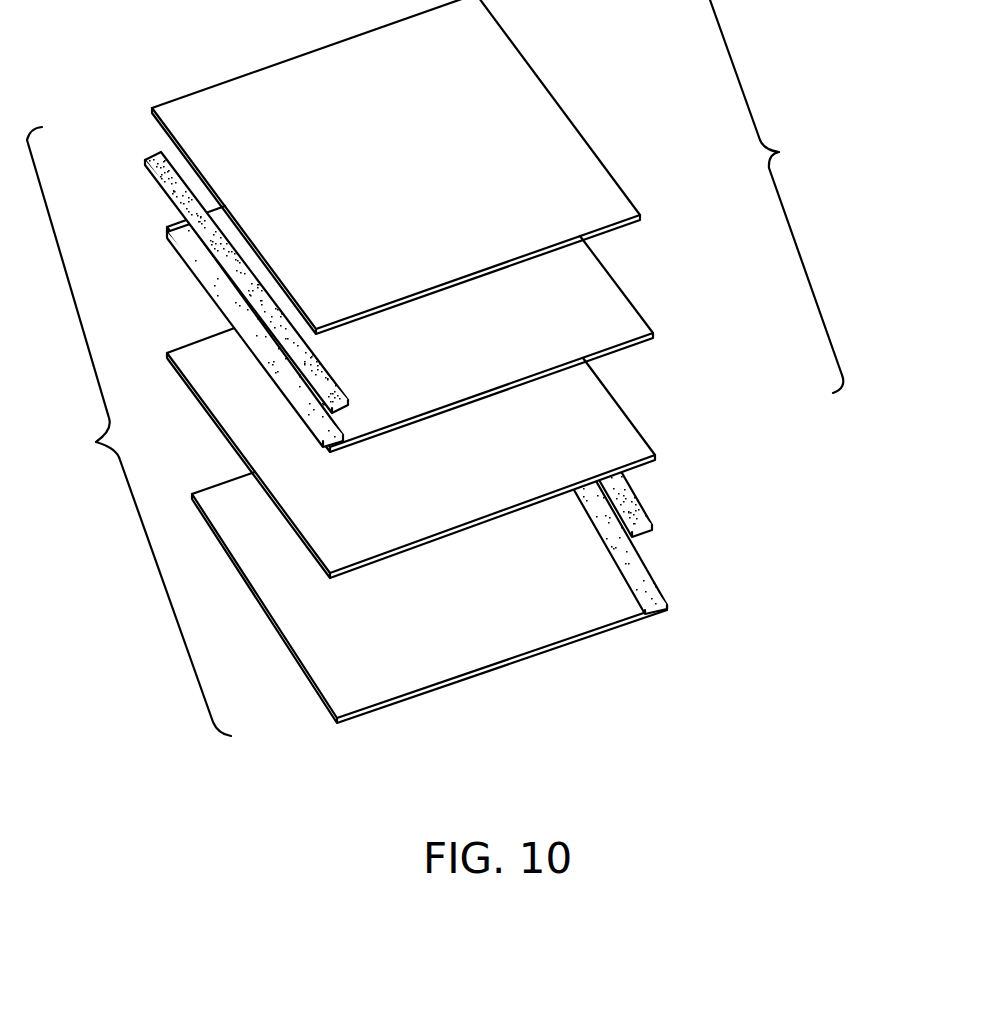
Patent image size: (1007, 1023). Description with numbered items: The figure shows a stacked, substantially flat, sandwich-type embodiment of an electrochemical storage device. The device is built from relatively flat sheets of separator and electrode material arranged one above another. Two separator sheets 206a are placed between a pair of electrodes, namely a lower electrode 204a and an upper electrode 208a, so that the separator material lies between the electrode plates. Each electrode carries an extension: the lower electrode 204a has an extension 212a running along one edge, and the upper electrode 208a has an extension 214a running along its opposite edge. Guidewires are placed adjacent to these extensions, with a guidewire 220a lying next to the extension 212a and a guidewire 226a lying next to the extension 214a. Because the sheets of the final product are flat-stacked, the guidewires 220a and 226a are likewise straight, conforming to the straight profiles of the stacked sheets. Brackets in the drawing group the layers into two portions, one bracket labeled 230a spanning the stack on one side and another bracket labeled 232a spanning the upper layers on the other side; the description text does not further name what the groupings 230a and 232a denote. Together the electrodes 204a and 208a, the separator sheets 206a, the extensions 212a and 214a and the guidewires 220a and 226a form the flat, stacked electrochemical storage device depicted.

The electrode 204a is at (588, 637).
The separator sheet 206a is at (636, 159).
The electrode 208a is at (643, 277).
The extension 212a is at (659, 593).
The extension 214a is at (167, 233).
The guidewire 220a is at (672, 502).
The guidewire 226a is at (156, 180).
The first layer subassembly 230a is at (128, 431).
The second layer subassembly 232a is at (781, 196).